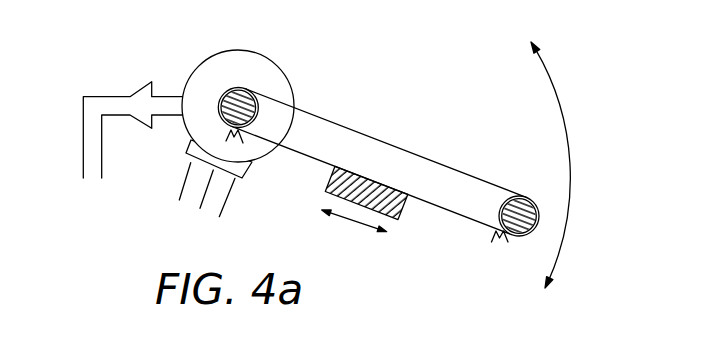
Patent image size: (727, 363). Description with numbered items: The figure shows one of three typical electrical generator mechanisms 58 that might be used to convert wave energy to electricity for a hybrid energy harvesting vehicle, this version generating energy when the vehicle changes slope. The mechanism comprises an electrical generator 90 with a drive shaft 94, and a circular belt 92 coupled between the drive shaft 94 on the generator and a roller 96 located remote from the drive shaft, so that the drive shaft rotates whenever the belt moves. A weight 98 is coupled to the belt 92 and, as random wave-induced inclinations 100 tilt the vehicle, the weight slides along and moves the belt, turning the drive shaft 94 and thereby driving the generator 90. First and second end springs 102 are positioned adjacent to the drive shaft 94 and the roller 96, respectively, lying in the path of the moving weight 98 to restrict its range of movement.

The electrical generator mechanism 58 is at (197, 62).
The electrical generator 90 is at (287, 77).
The circular belt 92 is at (392, 140).
The drive shaft 94 is at (235, 92).
The roller 96 is at (520, 207).
The weight 98 is at (404, 212).
The wave-induced inclinations 100 is at (575, 177).
The end springs 102 is at (242, 138).